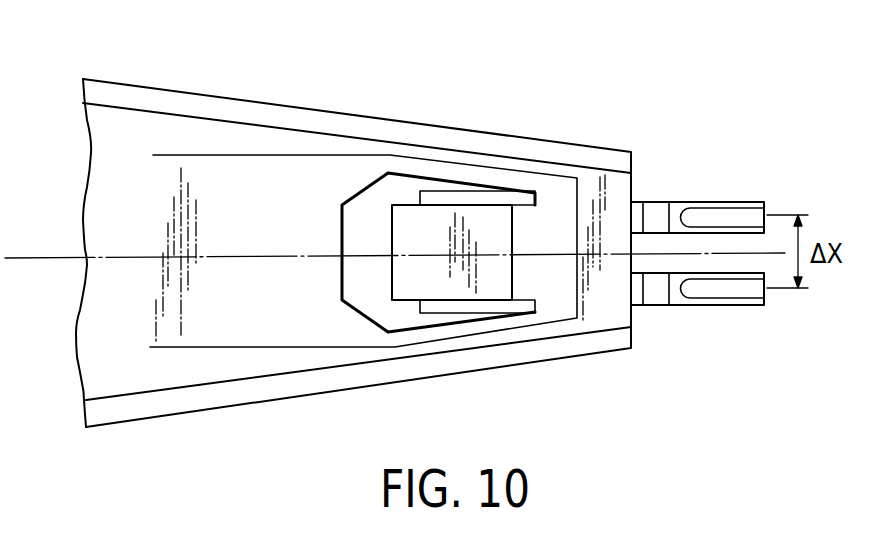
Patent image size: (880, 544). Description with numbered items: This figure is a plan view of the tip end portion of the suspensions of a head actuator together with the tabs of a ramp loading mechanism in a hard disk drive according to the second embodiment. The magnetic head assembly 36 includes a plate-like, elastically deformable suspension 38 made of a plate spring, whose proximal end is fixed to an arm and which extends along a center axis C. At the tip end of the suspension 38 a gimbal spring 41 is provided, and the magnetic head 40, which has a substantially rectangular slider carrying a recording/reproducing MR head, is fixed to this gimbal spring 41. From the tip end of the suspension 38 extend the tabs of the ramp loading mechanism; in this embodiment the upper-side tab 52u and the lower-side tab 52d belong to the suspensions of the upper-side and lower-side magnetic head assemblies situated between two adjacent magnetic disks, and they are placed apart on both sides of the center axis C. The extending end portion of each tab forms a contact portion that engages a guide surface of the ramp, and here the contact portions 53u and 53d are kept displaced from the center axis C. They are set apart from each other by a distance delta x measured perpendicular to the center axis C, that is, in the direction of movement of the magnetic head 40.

The magnetic head assembly 36 is at (188, 142).
The suspension 38 is at (274, 136).
The magnetic head 40 is at (492, 222).
The gimbal spring 41 is at (413, 162).
The lower-side tab 52d is at (658, 196).
The upper-side tab 52u is at (674, 317).
The contact portion 53d is at (729, 212).
The contact portion 53u is at (733, 300).
The center axis C is at (45, 258).